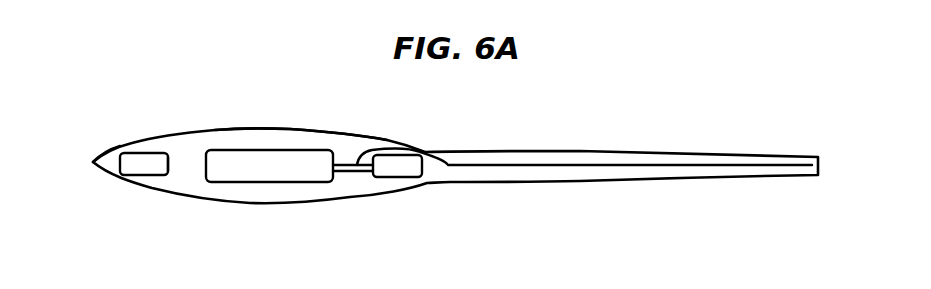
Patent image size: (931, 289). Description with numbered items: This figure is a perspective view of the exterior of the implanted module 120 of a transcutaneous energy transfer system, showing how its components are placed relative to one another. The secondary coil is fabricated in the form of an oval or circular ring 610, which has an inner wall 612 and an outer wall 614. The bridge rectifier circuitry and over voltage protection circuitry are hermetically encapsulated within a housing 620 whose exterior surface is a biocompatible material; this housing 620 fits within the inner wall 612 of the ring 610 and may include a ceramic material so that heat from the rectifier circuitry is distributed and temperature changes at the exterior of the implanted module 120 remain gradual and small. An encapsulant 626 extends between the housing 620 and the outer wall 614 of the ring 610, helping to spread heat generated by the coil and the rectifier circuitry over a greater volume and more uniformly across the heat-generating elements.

The implanted module 120 is at (201, 109).
The ring 610 is at (148, 155).
The inner wall 612 is at (168, 163).
The outer wall 614 is at (120, 163).
The housing 620 is at (292, 177).
The encapsulant 626 is at (272, 135).